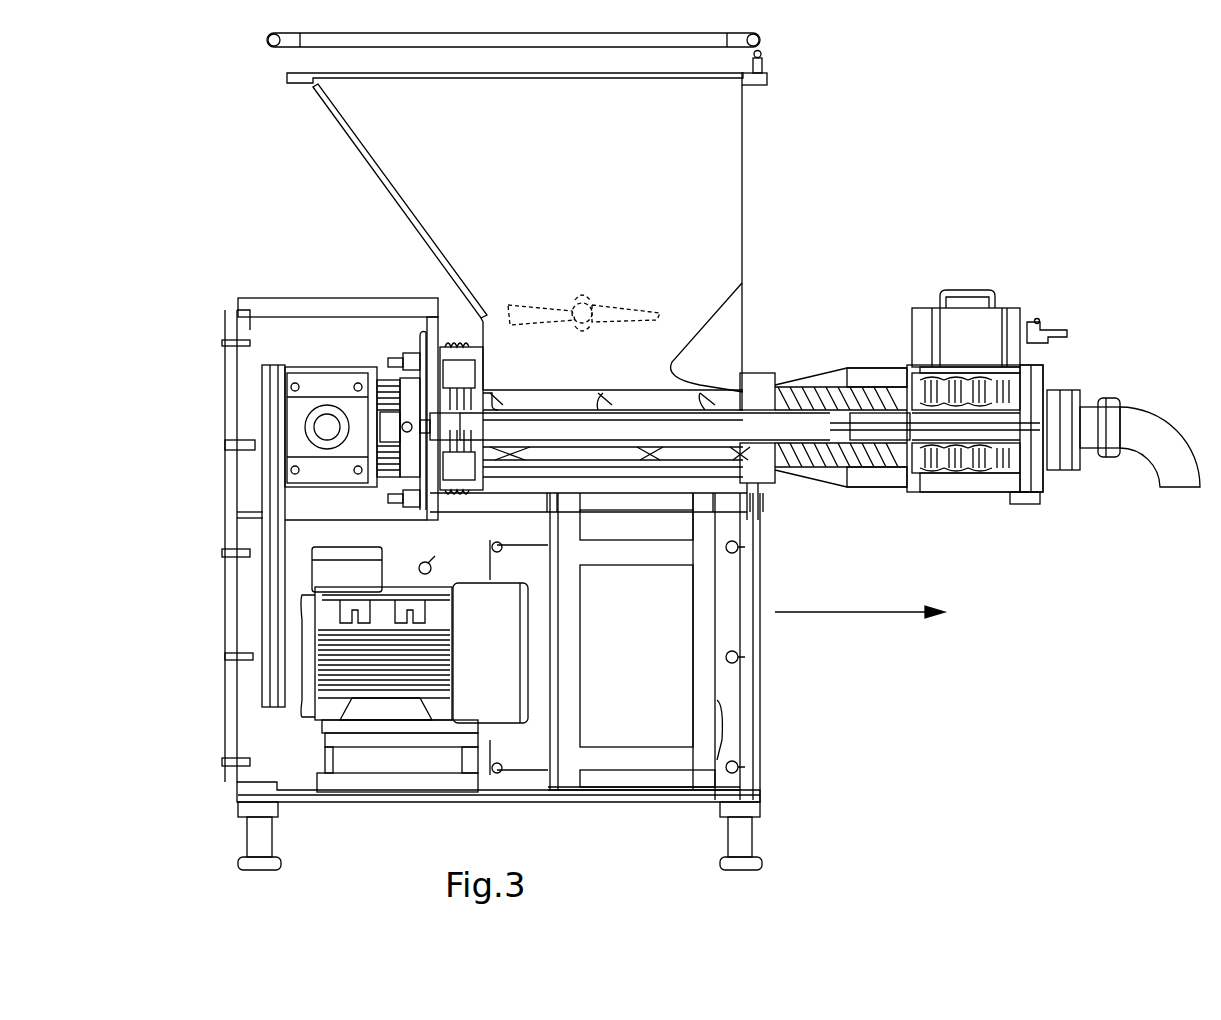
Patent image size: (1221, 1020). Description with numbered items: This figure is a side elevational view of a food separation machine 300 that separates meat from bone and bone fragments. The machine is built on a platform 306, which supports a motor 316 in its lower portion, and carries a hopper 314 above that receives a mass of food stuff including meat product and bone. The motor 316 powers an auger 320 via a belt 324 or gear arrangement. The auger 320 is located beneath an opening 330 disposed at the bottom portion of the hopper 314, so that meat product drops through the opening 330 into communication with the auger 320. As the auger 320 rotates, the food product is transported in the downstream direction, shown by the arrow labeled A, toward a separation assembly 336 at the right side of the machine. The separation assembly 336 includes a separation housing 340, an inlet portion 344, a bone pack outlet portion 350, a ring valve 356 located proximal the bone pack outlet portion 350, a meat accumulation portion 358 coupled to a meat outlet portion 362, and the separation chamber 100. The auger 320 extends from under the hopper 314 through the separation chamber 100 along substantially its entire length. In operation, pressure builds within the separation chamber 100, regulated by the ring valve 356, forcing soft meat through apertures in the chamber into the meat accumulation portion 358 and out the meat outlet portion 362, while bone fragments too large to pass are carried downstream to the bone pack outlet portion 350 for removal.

The food separation machine 300 is at (232, 67).
The hopper 314 is at (373, 125).
The opening 330 is at (520, 387).
The auger 320 is at (612, 392).
The inlet portion 344 is at (812, 355).
The separation housing 340 is at (872, 377).
The separation assembly 336 is at (1060, 307).
The ring valve 356 is at (1047, 383).
The belt 324 is at (273, 478).
The meat accumulation portion 358 is at (950, 480).
The separation chamber 100 is at (987, 477).
The meat outlet portion 362 is at (1153, 453).
The bone pack outlet portion 350 is at (1045, 520).
The motor 316 is at (327, 637).
The platform 306 is at (230, 733).